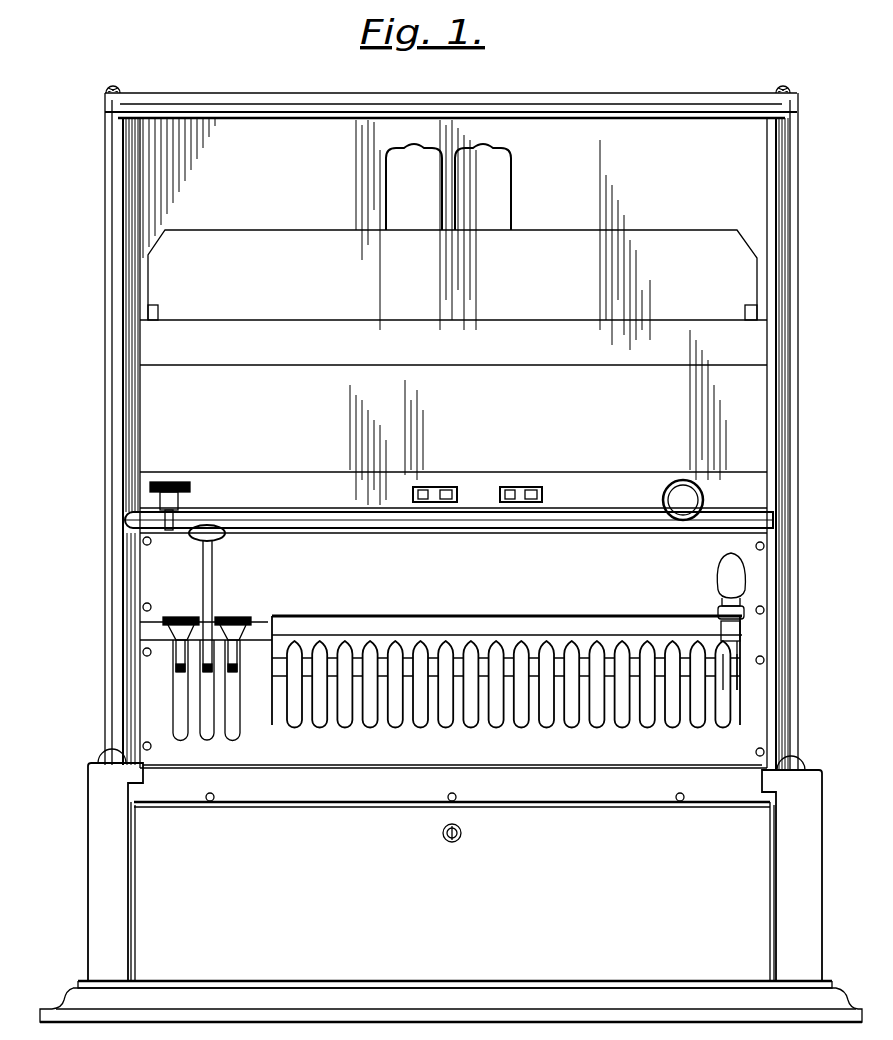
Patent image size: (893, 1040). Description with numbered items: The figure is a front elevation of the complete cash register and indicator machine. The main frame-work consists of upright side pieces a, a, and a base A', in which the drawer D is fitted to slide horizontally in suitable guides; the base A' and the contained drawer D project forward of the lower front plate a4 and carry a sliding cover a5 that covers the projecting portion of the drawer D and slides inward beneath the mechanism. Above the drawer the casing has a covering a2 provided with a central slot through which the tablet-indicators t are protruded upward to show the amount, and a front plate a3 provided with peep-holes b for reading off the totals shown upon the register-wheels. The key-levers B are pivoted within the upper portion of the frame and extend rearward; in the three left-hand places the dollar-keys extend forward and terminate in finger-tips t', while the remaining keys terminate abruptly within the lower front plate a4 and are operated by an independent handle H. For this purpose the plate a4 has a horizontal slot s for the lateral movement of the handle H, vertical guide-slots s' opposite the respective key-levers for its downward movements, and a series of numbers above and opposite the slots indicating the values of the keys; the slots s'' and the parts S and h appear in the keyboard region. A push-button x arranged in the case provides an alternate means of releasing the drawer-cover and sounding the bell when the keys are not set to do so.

The side pieces a is at (106, 483).
The covering a2 is at (575, 230).
The front plate a3 is at (449, 502).
The lower front plate a4 is at (820, 715).
The sliding cover a5 is at (452, 783).
The tablet-indicators t is at (447, 192).
The finger-tips t' is at (221, 632).
The push-button x is at (168, 490).
The peep-holes b is at (500, 478).
The horizontal slot s is at (207, 690).
The vertical guide-slots s' is at (360, 739).
The key slots s'' is at (574, 741).
The key plate S is at (512, 674).
The key-levers B is at (370, 660).
The guide bar h is at (618, 628).
The handle H is at (726, 566).
The base A' is at (451, 885).
The drawer D is at (452, 891).